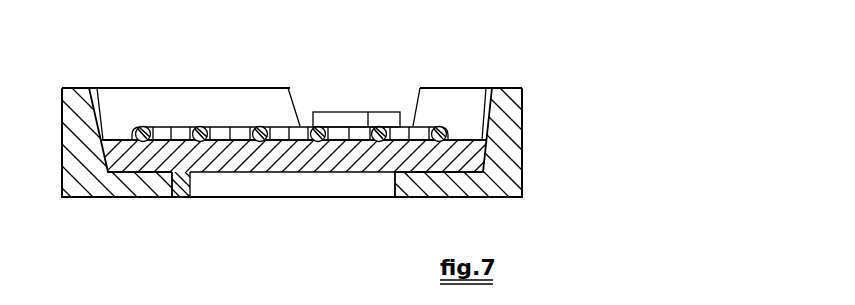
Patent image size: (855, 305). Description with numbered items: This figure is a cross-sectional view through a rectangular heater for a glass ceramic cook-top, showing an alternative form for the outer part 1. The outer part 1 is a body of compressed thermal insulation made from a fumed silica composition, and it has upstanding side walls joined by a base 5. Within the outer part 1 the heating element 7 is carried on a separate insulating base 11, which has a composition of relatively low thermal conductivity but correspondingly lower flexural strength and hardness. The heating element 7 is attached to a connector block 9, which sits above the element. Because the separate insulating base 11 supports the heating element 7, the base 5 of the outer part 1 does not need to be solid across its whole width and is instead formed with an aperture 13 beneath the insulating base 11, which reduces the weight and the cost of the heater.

The outer part 1 is at (528, 106).
The base 5 is at (98, 188).
The heating element 7 is at (205, 127).
The connector block 9 is at (353, 112).
The separate insulating base 11 is at (172, 178).
The aperture 13 is at (288, 183).